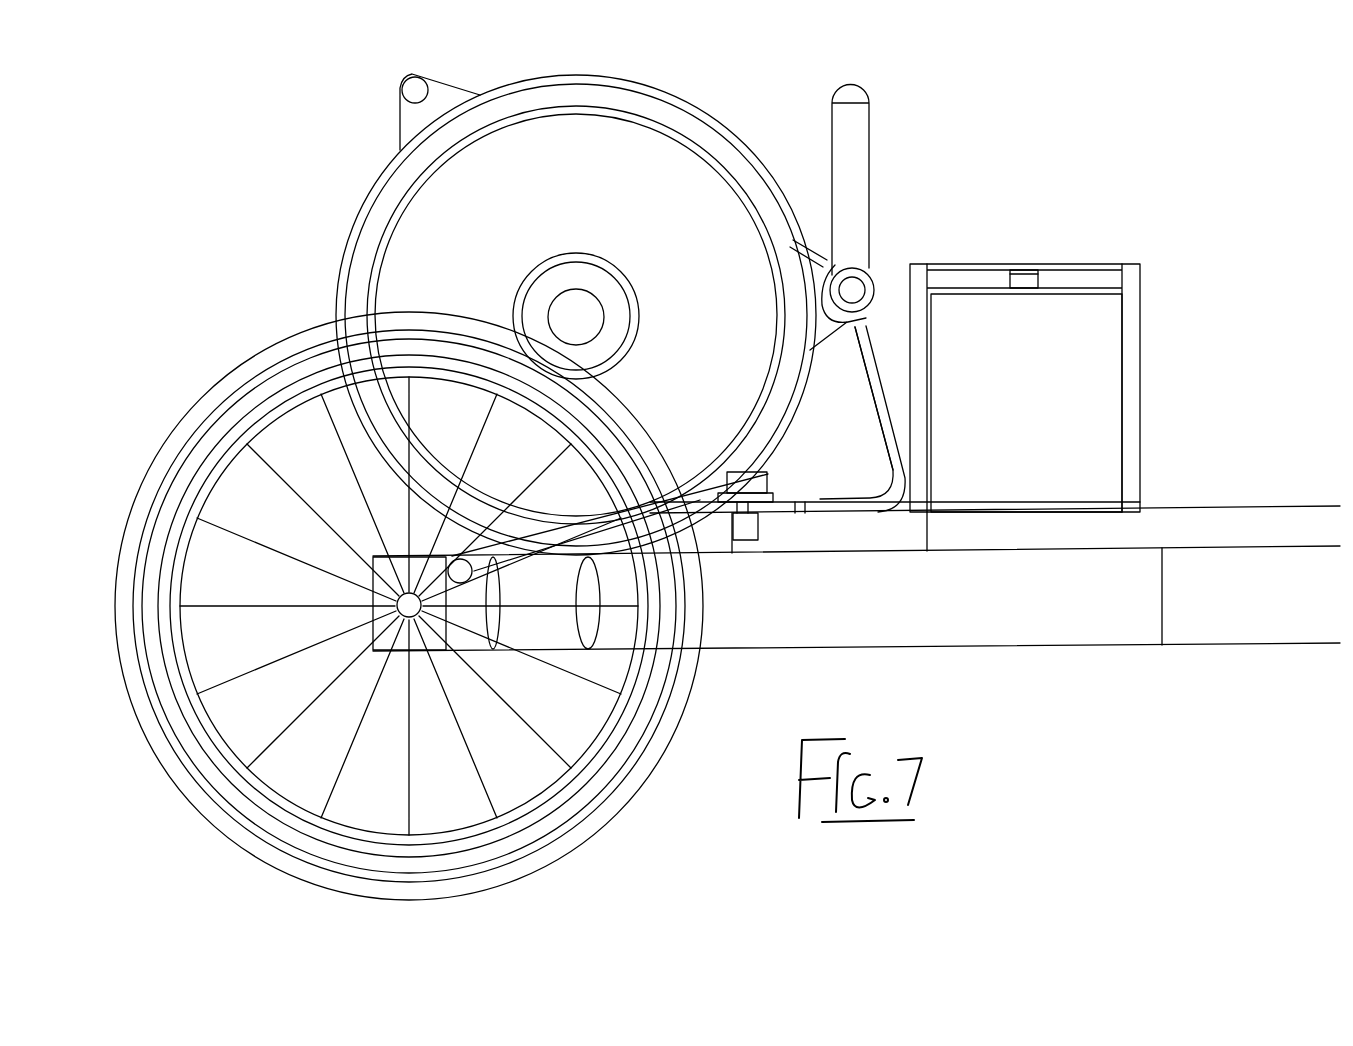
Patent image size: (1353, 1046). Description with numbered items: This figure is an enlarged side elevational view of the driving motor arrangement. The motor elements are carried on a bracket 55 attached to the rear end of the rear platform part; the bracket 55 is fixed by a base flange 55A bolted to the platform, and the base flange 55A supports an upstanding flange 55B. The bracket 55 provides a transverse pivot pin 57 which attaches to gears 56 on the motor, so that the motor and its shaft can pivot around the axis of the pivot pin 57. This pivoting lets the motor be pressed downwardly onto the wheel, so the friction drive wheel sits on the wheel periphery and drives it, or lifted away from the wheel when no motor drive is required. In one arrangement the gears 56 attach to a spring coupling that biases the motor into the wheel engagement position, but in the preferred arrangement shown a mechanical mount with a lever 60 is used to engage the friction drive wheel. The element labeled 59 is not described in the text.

The bracket 55 is at (889, 408).
The base flange 55A is at (822, 503).
The upstanding flange 55B is at (873, 364).
The gears 56 is at (824, 258).
The transverse pivot pin 57 is at (852, 290).
The mounting bracket 59 is at (438, 98).
The lever 60 is at (853, 165).